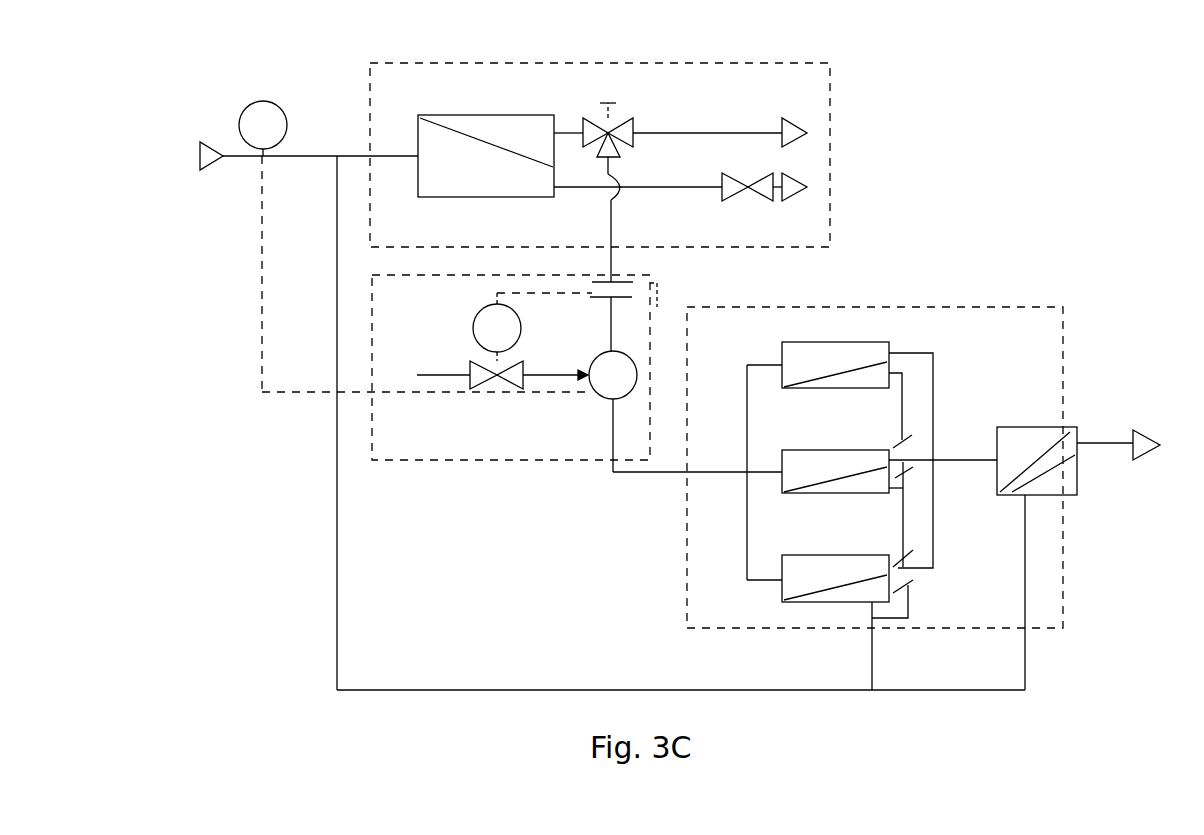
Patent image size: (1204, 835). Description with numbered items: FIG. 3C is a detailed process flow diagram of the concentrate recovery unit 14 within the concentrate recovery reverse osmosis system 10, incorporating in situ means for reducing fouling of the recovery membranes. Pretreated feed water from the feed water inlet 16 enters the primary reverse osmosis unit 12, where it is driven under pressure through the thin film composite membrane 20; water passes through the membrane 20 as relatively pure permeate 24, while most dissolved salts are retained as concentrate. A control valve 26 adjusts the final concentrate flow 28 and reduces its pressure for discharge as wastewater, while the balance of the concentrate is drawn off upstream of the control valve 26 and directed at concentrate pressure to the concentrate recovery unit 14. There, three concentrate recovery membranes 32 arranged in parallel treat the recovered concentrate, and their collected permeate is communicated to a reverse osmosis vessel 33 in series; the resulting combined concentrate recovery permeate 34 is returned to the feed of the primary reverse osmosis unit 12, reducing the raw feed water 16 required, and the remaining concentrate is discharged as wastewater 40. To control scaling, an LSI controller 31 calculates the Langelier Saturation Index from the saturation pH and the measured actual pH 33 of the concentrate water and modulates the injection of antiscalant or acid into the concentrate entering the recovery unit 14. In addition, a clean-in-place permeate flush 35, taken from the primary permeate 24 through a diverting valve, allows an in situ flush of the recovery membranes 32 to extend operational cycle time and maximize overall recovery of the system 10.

The concentrate recovery reverse osmosis system 10 is at (268, 588).
The primary reverse osmosis unit 12 is at (845, 84).
The concentrate recovery unit 14 is at (1075, 552).
The feed water inlet 16 is at (194, 156).
The thin film composite membrane 20 is at (570, 137).
The permeate 24 is at (730, 123).
The control valve 26 is at (752, 202).
The final concentrate flow 28 is at (805, 199).
The LSI controller 31 is at (456, 355).
The concentrate recovery membranes 32 is at (840, 466).
The reverse osmosis vessel 33 is at (654, 314).
The combined concentrate recovery permeate 34 is at (681, 592).
The clean-in-place permeate flush 35 is at (608, 177).
The wastewater 40 is at (1140, 445).